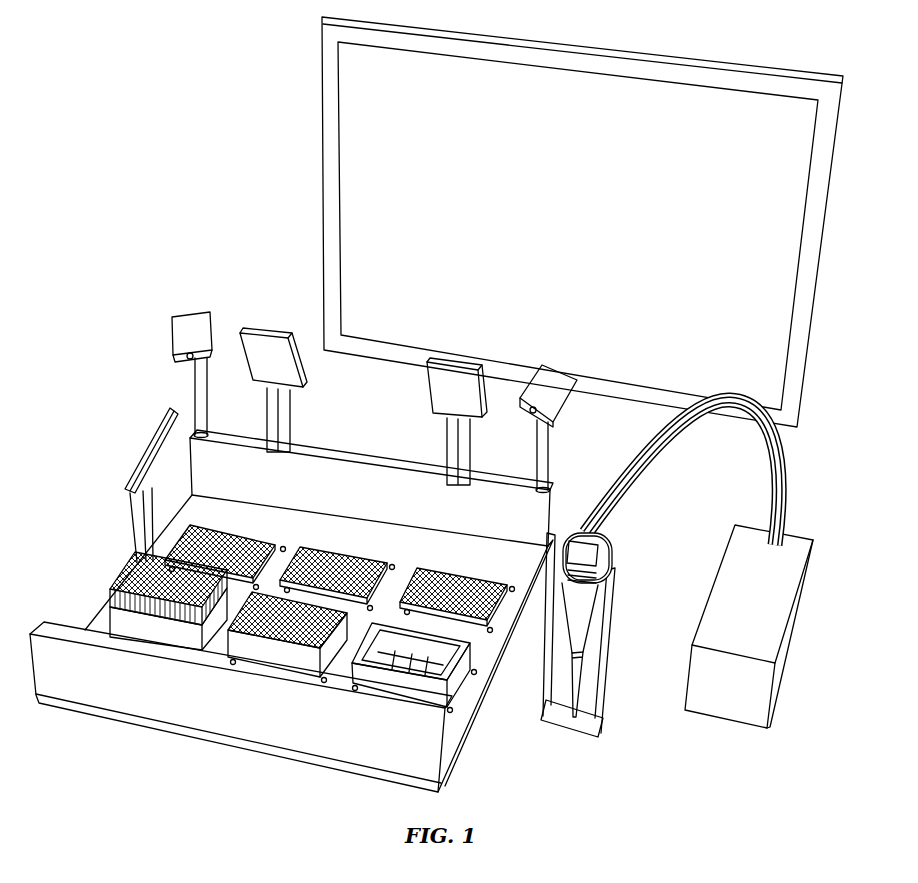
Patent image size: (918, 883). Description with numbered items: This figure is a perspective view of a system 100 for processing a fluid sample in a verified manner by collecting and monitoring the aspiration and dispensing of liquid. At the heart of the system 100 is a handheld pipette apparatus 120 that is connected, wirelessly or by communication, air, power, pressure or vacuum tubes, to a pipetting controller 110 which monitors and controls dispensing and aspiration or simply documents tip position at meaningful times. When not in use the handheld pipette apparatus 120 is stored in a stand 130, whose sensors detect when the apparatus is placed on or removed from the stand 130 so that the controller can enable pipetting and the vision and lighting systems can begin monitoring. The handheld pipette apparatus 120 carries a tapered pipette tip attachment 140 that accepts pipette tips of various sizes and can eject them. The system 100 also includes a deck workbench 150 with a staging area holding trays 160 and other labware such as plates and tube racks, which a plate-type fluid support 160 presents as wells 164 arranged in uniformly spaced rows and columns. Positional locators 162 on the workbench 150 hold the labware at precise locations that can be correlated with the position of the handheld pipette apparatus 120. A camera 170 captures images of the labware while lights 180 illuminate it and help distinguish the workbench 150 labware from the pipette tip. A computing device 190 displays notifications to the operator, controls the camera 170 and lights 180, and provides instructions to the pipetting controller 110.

The system 100 is at (152, 54).
The pipetting controller 110 is at (729, 527).
The handheld pipette apparatus 120 is at (605, 537).
The stand 130 is at (615, 592).
The pipette tip attachment 140 is at (585, 687).
The deck workbench 150 is at (37, 622).
The trays 160 is at (326, 573).
The positional locators 162 is at (280, 547).
The wells 164 is at (217, 532).
The camera 170 is at (184, 308).
The lights 180 is at (260, 334).
The computing device 190 is at (322, 100).